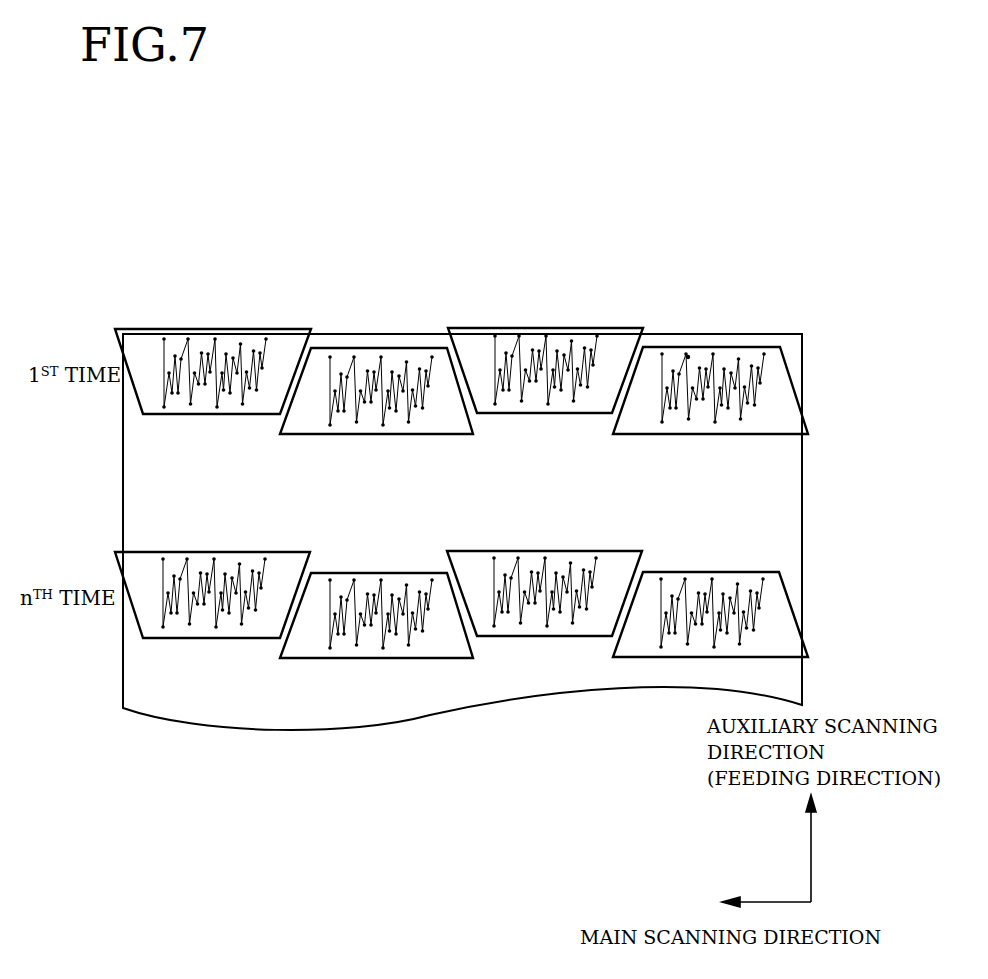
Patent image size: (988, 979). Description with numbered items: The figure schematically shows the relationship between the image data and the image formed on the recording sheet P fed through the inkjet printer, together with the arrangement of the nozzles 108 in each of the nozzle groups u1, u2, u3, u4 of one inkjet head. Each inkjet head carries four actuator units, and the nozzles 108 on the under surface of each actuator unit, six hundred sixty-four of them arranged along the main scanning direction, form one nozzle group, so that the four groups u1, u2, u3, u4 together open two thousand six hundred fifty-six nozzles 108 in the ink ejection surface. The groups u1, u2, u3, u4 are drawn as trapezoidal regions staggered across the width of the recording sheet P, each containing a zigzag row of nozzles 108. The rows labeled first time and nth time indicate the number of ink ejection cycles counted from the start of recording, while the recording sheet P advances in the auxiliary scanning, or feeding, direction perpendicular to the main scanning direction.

The recording sheet P is at (383, 333).
The nozzle 108 is at (688, 357).
The nozzle group u1 is at (213, 496).
The nozzle group u2 is at (376, 515).
The nozzle group u3 is at (545, 495).
The nozzle group u4 is at (710, 514).